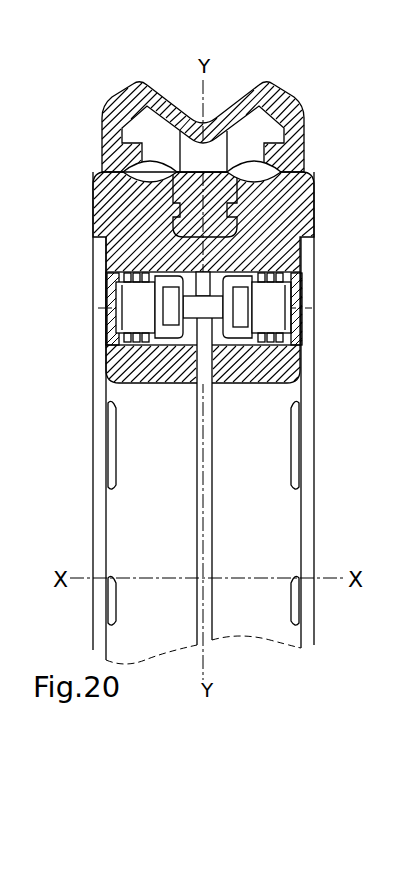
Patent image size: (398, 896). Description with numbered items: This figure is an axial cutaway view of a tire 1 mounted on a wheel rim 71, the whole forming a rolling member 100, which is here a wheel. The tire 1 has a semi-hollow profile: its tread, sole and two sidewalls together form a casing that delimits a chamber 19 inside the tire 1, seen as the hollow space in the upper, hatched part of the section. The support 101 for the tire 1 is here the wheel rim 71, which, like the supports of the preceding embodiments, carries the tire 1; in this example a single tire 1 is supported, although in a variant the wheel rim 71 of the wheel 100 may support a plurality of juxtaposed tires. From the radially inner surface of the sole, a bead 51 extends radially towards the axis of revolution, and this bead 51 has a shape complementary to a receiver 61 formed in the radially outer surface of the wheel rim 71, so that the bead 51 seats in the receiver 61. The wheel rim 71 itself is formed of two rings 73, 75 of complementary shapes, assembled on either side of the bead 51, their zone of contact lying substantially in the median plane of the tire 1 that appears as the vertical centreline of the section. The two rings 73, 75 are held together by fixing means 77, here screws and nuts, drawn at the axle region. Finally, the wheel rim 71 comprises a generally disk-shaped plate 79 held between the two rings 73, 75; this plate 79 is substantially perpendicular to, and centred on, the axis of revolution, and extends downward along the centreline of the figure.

The rolling member 100 is at (127, 50).
The tire 1 is at (297, 84).
The chamber 19 is at (252, 115).
The bead 51 is at (236, 165).
The receiver 61 is at (130, 166).
The ring 73 is at (137, 248).
The ring 75 is at (278, 227).
The support 101 is at (310, 250).
The wheel rim 71 is at (272, 263).
The fixing means 77 is at (238, 330).
The plate 79 is at (212, 503).